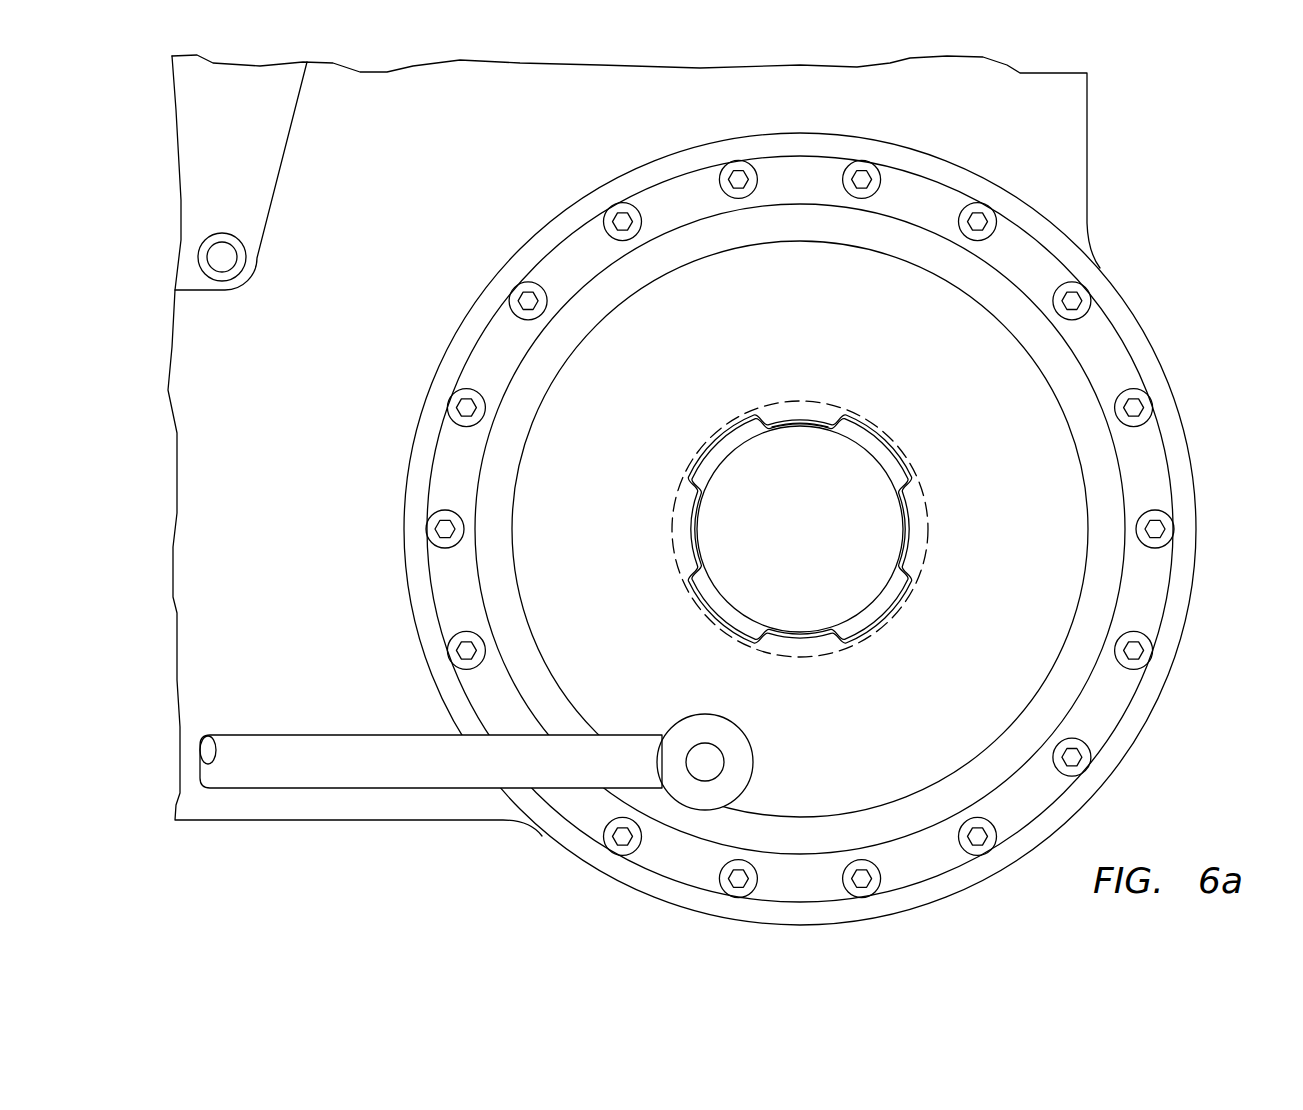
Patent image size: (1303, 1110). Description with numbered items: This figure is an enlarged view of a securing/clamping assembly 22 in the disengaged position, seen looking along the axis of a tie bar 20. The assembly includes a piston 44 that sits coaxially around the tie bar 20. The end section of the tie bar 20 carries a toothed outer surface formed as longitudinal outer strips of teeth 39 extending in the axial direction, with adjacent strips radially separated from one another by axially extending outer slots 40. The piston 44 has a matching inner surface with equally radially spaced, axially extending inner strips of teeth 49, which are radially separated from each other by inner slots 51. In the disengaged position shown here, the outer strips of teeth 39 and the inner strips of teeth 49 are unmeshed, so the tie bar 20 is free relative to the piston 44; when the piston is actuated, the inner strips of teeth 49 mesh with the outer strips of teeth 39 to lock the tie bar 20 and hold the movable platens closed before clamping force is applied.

The securing/clamping assembly 22 is at (678, 175).
The piston 44 is at (594, 512).
The inner strips of teeth 49 is at (923, 545).
The inner slots 51 is at (712, 440).
The outer strips of teeth 39 is at (892, 453).
The outer slots 40 is at (793, 424).
The tie bar 20 is at (759, 515).